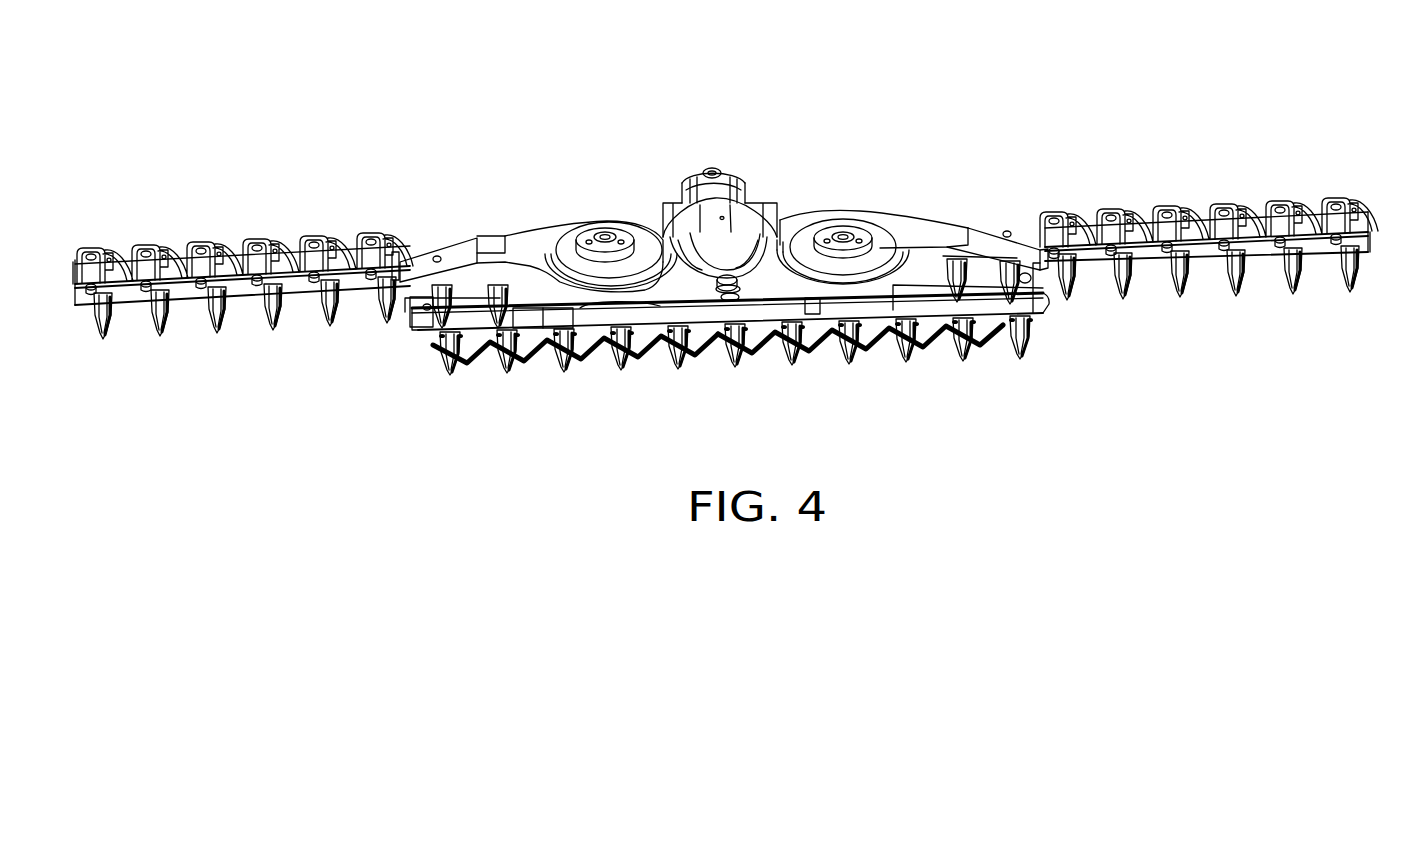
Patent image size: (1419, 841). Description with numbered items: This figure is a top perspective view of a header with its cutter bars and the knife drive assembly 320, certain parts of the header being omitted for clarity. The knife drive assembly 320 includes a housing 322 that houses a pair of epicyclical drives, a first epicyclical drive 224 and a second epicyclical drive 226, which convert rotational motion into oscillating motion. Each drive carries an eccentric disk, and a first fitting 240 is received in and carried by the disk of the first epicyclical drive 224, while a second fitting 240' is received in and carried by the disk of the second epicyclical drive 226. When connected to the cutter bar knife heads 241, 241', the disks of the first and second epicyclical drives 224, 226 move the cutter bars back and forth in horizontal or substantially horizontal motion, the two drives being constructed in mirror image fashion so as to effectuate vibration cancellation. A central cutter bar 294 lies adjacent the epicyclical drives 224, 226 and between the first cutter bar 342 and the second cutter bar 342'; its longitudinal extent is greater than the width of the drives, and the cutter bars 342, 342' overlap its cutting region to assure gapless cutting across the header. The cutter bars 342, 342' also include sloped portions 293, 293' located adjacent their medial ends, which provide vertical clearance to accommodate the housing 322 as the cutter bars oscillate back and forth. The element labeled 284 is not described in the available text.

The knife drive assembly 320 is at (507, 112).
The gearbox 284 is at (718, 168).
The first fitting 240 is at (605, 219).
The second fitting 240' is at (869, 200).
The housing 322 is at (802, 218).
The cutter bar knife head 241 is at (570, 236).
The cutter bar knife head 241' is at (887, 203).
The sloped portion 293 is at (430, 241).
The sloped portion 293' is at (1018, 212).
The first cutter bar 342 is at (243, 310).
The second cutter bar 342' is at (1209, 283).
The central cutter bar 294 is at (447, 375).
The first epicyclical drive 224 is at (548, 292).
The second epicyclical drive 226 is at (889, 284).